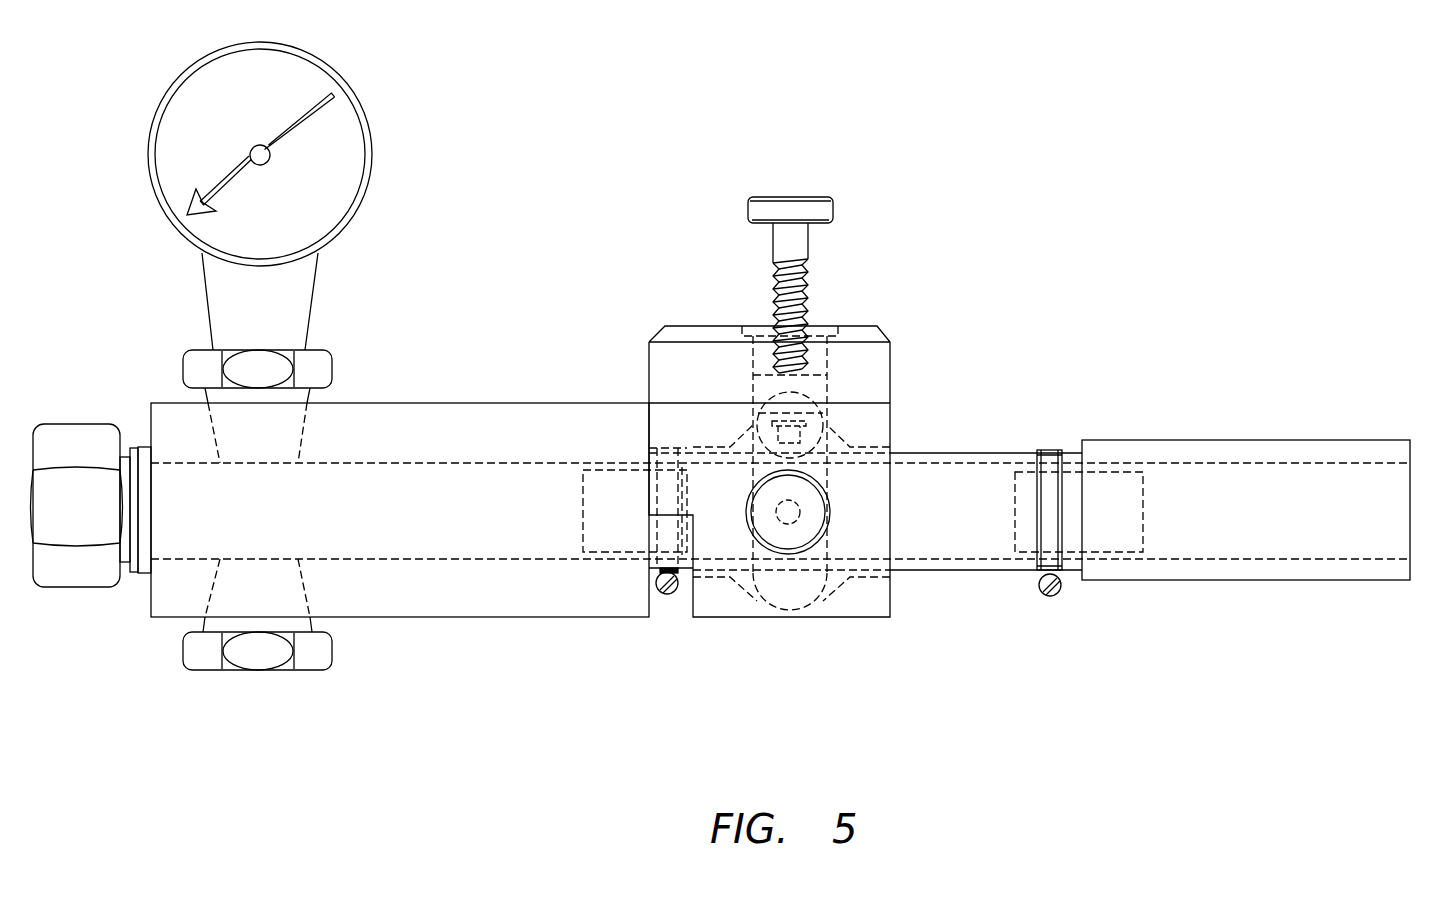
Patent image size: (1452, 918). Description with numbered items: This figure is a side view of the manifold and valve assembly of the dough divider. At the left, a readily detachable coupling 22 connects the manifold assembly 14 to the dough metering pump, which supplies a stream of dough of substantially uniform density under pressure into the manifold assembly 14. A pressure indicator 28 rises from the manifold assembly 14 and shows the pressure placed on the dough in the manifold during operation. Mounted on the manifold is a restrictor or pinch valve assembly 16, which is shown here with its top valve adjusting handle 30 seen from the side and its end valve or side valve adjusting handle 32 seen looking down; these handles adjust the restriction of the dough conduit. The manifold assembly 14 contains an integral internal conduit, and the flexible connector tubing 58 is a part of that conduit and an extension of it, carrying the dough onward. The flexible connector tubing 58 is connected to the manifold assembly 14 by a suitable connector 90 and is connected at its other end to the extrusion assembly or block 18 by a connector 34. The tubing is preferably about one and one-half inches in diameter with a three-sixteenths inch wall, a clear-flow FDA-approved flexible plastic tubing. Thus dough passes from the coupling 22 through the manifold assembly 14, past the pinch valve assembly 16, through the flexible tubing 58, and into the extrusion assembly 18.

The manifold assembly 14 is at (452, 405).
The restrictor or pinch valve assembly 16 is at (857, 326).
The extrusion assembly or block 18 is at (1295, 440).
The readily detachable coupling 22 is at (117, 575).
The pressure indicator 28 is at (337, 72).
The top valve adjusting handle 30 is at (792, 193).
The end valve or side valve adjusting handle 32 is at (840, 533).
The connector 34 is at (1143, 527).
The flexible connector tubing 58 is at (952, 453).
The connector 90 is at (670, 595).